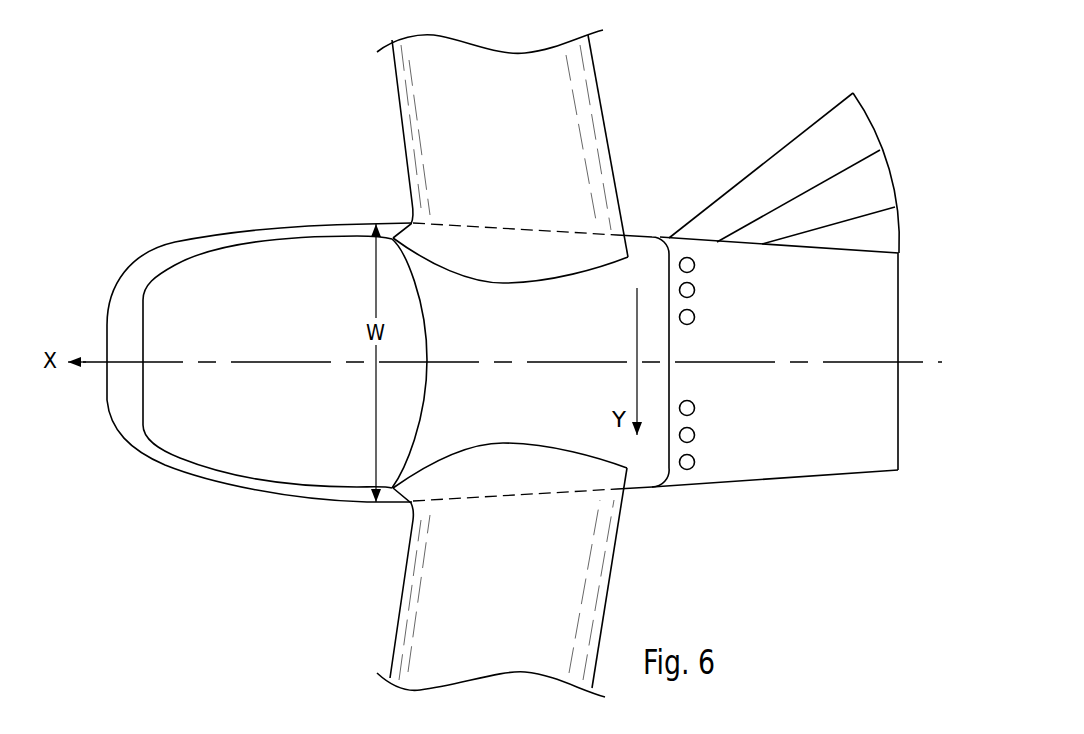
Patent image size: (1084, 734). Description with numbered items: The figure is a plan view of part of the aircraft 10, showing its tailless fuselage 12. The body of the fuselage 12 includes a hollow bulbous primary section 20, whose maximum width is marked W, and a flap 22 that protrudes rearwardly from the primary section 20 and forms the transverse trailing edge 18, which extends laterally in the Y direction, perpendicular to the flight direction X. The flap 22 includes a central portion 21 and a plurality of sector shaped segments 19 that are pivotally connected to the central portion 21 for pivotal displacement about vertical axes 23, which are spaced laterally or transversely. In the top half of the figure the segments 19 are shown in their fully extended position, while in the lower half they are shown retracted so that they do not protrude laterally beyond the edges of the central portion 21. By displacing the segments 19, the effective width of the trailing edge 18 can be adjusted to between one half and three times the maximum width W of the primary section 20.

The aircraft 10 is at (175, 215).
The tailless fuselage 12 is at (292, 513).
The transverse trailing edge 18 is at (900, 390).
The sector shaped segments 19 is at (863, 130).
The hollow bulbous primary section 20 is at (348, 192).
The central portion 21 is at (758, 457).
The flap 22 is at (818, 417).
The vertical axes 23 is at (695, 264).